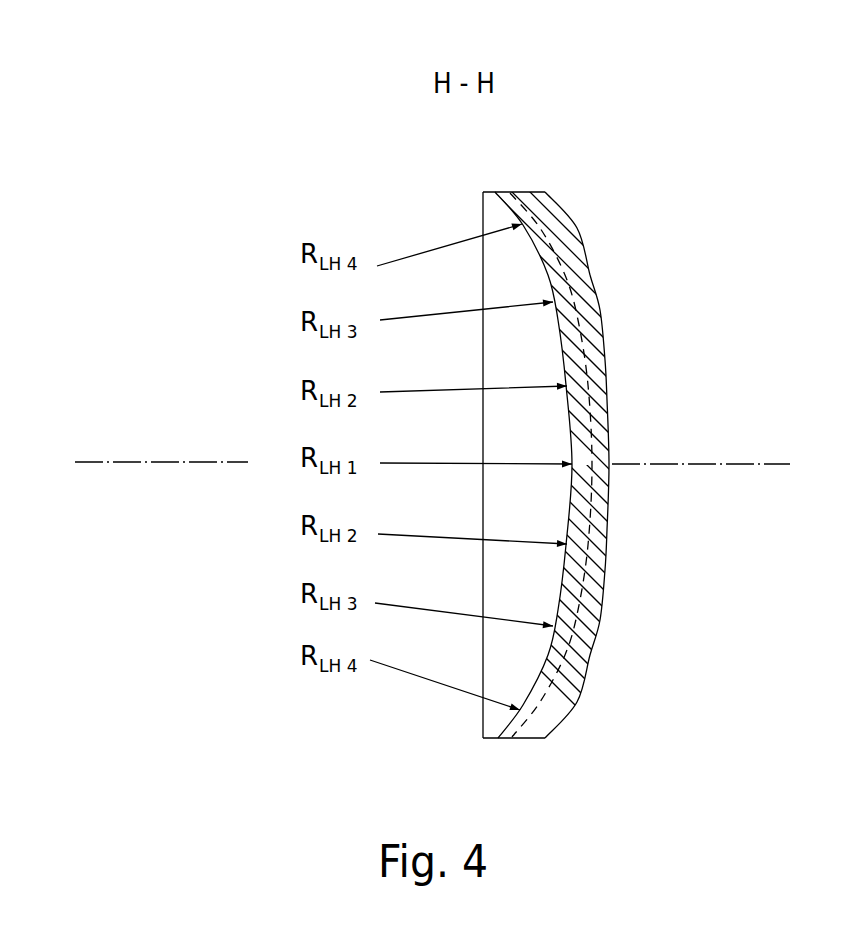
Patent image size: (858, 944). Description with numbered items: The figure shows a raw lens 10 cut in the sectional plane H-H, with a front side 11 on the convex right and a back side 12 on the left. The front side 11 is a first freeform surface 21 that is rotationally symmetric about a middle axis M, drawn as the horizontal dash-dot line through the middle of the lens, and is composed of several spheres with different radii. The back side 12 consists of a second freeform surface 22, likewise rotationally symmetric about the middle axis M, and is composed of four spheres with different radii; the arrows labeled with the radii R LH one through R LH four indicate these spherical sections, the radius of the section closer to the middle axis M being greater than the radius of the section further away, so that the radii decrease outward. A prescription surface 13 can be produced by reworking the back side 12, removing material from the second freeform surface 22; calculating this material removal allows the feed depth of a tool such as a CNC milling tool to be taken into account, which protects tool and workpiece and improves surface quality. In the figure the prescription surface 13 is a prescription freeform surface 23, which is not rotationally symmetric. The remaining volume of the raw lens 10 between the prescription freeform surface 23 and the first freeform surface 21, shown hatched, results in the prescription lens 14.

The raw lens 10 is at (668, 124).
The front side 11 is at (580, 229).
The first freeform surface 21 is at (602, 310).
The prescription surface 13 is at (607, 398).
The prescription freeform surface 23 is at (645, 558).
The prescription lens 14 is at (600, 523).
The back side 12 is at (559, 649).
The second freeform surface 22 is at (597, 546).
The middle axis M is at (779, 461).